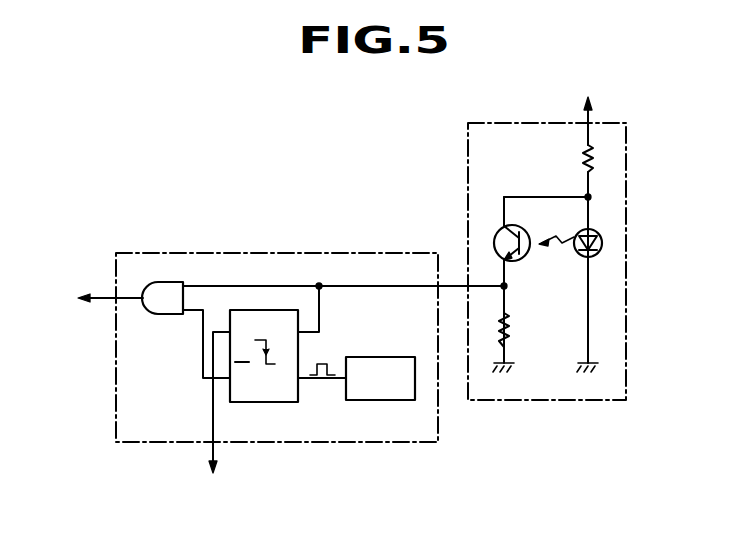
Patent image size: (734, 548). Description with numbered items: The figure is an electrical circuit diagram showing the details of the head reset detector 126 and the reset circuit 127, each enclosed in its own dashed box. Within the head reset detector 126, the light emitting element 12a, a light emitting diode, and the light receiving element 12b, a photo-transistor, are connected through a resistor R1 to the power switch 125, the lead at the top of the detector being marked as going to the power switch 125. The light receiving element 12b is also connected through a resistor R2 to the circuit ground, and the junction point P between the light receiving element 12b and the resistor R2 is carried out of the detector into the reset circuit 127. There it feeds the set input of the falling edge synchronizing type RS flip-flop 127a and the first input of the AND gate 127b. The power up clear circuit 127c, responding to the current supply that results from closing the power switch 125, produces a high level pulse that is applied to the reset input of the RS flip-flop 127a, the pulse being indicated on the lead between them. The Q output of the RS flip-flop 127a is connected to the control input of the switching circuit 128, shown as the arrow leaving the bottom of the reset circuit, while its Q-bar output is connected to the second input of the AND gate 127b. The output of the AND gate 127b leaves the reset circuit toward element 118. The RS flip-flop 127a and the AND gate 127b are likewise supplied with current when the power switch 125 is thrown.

The reset circuit 127 is at (313, 252).
The RS flip-flop 127a is at (268, 402).
The AND gate 127b is at (166, 316).
The power up clear circuit 127c is at (380, 357).
The head reset detector 126 is at (627, 196).
The light emitting element 12a is at (578, 257).
The light receiving element 12b is at (497, 228).
The resistor R1 is at (578, 163).
The resistor R2 is at (512, 330).
The power switch 125 is at (575, 110).
The output to 118 is at (84, 299).
The switching circuit 128 is at (202, 419).